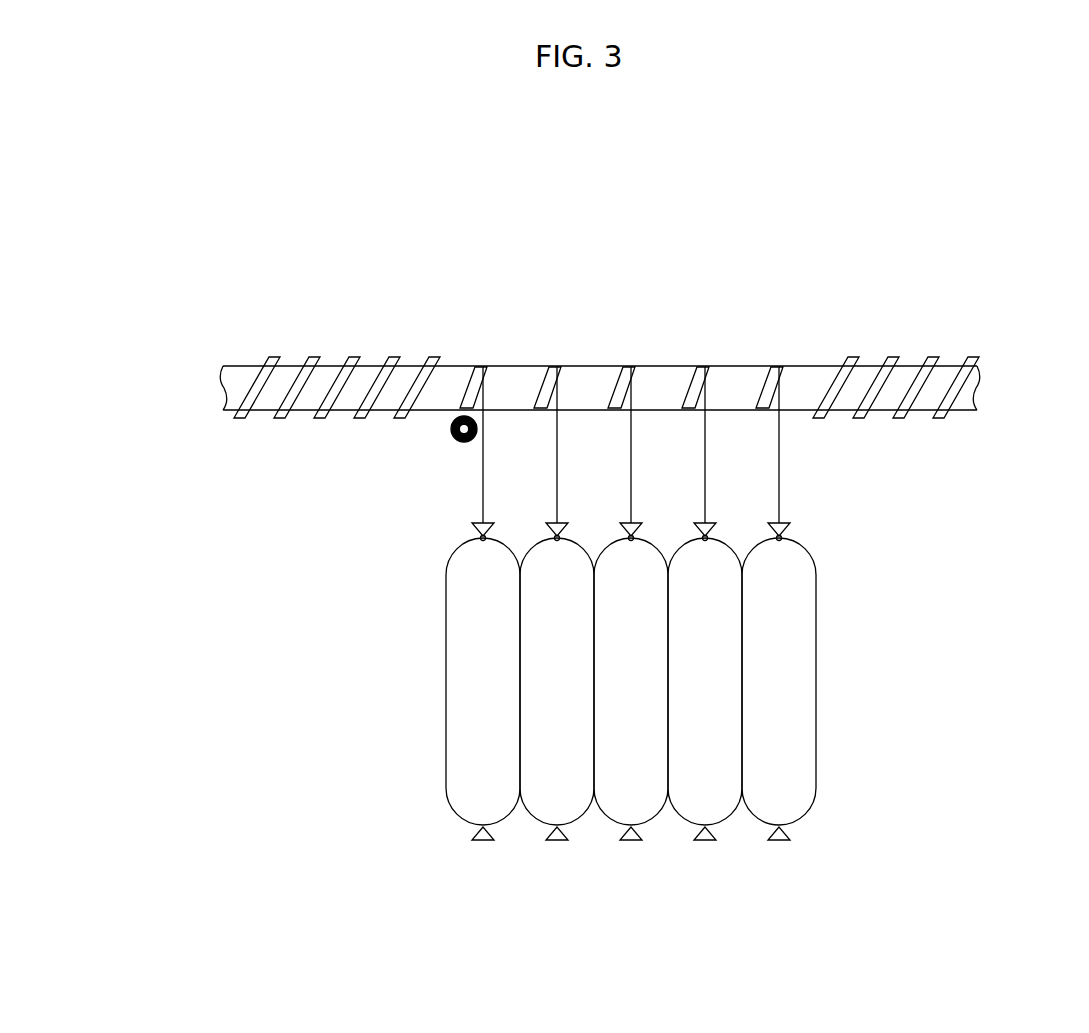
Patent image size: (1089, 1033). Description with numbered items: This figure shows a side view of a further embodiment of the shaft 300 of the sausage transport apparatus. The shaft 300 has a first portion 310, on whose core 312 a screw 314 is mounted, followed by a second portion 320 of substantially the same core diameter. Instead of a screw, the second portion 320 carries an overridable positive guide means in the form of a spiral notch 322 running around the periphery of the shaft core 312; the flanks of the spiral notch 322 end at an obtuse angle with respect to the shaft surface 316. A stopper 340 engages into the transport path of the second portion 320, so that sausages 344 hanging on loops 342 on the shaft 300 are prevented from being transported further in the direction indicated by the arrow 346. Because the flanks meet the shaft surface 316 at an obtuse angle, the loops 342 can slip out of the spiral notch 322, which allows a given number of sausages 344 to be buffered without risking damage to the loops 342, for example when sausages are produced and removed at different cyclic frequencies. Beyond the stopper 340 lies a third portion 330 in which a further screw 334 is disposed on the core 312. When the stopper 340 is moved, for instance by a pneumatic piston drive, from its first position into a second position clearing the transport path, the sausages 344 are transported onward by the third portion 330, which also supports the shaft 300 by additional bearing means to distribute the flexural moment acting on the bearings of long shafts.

The shaft 300 is at (494, 278).
The first portion 310 is at (876, 434).
The core 312 is at (958, 357).
The screw 314 is at (922, 362).
The shaft surface 316 is at (735, 365).
The second portion 320 is at (608, 338).
The spiral notch 322 is at (781, 365).
The third portion 330 is at (302, 340).
The screw 334 is at (268, 357).
The stopper 340 is at (452, 441).
The loops 342 is at (480, 493).
The sausages 344 is at (475, 643).
The arrow 346 is at (623, 937).